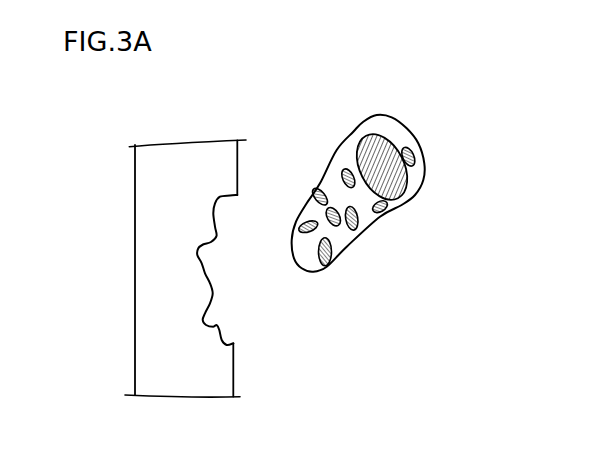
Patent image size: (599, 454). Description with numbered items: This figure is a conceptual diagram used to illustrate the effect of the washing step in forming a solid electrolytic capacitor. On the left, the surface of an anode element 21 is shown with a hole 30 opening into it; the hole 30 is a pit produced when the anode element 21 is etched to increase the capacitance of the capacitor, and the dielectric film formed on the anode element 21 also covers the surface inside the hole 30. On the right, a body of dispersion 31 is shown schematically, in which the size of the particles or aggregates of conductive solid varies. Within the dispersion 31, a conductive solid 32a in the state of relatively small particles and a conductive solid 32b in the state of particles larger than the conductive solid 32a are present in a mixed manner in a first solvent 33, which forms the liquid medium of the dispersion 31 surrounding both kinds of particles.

The anode element 21 is at (211, 243).
The hole 30 is at (227, 273).
The dispersion 31 is at (386, 185).
The conductive solid 32a is at (347, 210).
The conductive solid 32b is at (407, 180).
The first solvent 33 is at (403, 137).